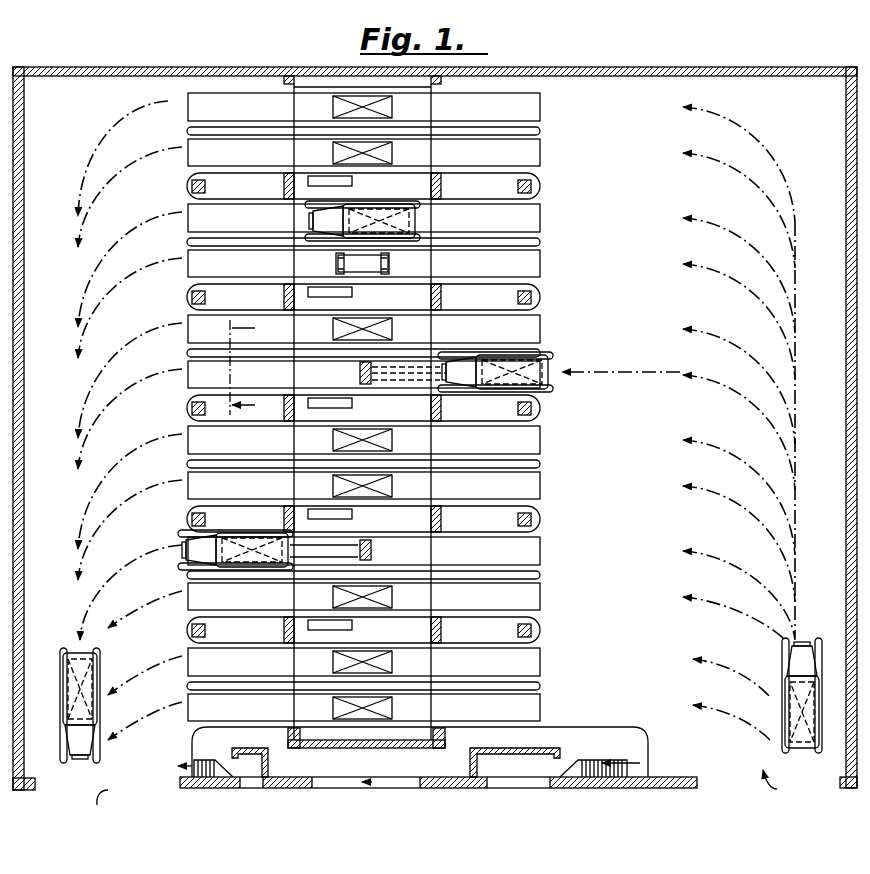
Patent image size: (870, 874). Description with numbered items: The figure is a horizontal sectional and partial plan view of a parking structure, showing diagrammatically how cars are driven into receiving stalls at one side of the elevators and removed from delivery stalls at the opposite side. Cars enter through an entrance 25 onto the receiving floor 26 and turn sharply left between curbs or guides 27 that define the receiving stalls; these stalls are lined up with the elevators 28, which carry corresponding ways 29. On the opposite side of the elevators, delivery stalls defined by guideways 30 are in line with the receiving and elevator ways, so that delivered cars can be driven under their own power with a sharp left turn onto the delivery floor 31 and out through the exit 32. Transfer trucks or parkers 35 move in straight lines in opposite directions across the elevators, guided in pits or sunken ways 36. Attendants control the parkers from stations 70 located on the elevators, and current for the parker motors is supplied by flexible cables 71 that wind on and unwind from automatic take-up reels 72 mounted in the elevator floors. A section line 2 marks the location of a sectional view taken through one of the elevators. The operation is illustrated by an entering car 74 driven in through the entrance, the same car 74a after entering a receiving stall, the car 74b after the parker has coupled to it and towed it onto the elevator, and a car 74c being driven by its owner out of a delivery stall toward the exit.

The section line 2- 2 is at (249, 367).
The entrance 25 is at (782, 785).
The receiving floor 26 is at (702, 423).
The curbs or guides 27 is at (558, 664).
The elevators 28 is at (412, 728).
The ways 29 is at (414, 680).
The guideways 30 is at (190, 685).
The delivery floor 31 is at (110, 420).
The exit 32 is at (116, 793).
The transfer trucks or parkers 35 is at (333, 660).
The pits or sunken ways 36 is at (364, 407).
The control stations 70 is at (307, 299).
The flexible cables 71 is at (323, 550).
The automatic take-up reels 72 is at (373, 550).
The entering car 74 is at (802, 695).
The car in receiving stall 74a is at (553, 388).
The car on elevator 74b is at (420, 218).
The car leaving delivery stall 74c is at (80, 705).